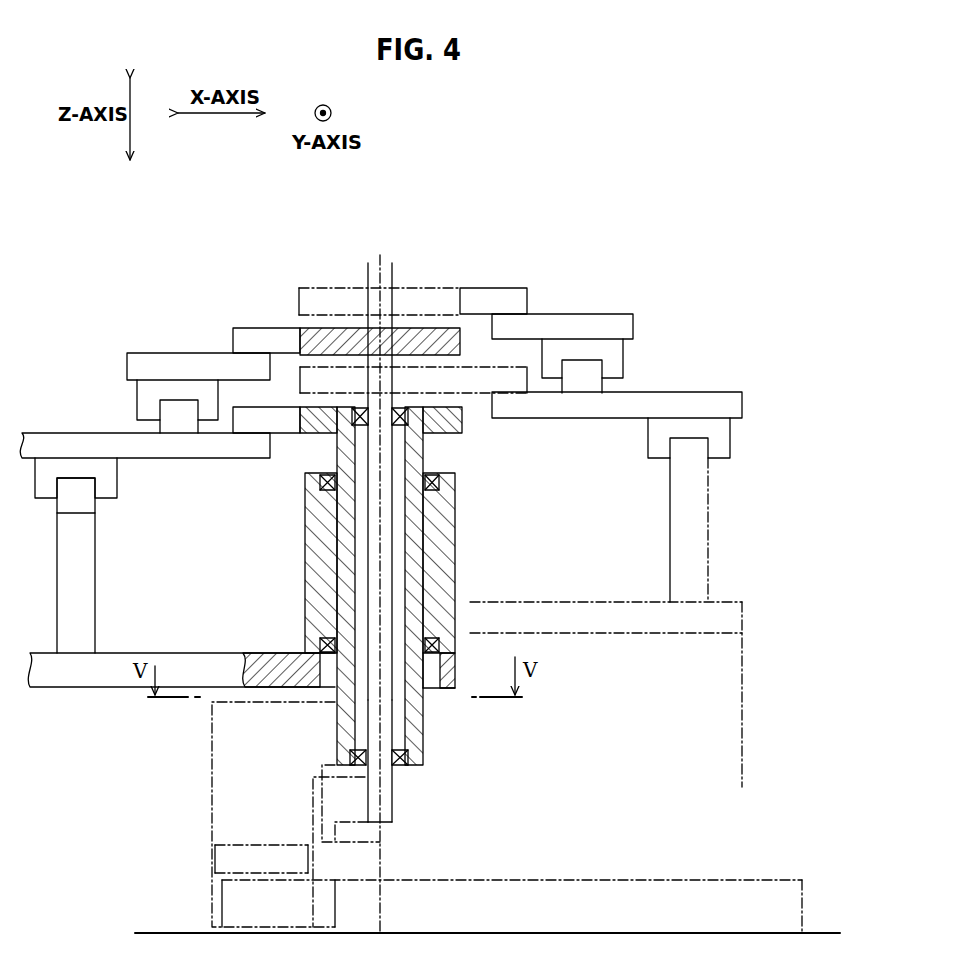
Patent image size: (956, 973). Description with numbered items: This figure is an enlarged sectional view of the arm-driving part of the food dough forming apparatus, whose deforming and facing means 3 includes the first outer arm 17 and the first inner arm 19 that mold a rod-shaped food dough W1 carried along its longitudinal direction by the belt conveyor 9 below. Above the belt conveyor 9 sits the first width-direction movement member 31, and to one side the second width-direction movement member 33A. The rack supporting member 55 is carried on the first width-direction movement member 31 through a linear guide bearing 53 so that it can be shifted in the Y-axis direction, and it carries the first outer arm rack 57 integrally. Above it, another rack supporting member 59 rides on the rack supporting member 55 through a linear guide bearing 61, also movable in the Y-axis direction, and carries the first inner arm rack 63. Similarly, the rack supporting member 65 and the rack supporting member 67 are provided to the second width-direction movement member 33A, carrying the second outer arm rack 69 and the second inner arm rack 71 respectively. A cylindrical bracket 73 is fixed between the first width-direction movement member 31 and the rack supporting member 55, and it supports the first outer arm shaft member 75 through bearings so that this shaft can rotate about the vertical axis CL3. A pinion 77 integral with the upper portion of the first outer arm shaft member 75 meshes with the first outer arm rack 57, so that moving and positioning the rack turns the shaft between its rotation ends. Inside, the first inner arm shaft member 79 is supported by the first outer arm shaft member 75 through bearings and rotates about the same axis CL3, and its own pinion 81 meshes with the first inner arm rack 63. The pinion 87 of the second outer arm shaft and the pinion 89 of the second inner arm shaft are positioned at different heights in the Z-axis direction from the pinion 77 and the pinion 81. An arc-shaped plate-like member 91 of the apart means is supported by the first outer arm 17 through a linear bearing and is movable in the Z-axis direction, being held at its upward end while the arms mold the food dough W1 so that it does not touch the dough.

The deforming and facing means 3 is at (386, 252).
The belt conveyor 9 is at (668, 931).
The first outer arm 17 is at (212, 780).
The first inner arm 19 is at (337, 858).
The first width-direction movement member 31 is at (126, 653).
The second width-direction movement member 33A is at (600, 602).
The linear guide bearing 53 is at (117, 482).
The rack supporting member 55 is at (40, 433).
The first outer arm rack 57 is at (283, 434).
The rack supporting member 59 is at (150, 353).
The linear guide bearing 61 is at (137, 402).
The first inner arm rack 63 is at (260, 328).
The rack supporting member 65 is at (715, 392).
The rack supporting member 67 is at (608, 314).
The second outer arm rack 69 is at (522, 367).
The second inner arm rack 71 is at (499, 288).
The cylindrical bracket 73 is at (458, 576).
The first outer arm shaft member 75 is at (423, 730).
The pinion 77 is at (312, 437).
The first inner arm shaft member 79 is at (393, 795).
The pinion 81 is at (462, 342).
The pinion 87 is at (447, 397).
The pinion 89 is at (440, 288).
The arc-shaped plate-like member 91 is at (247, 845).
The axis CL3 is at (382, 527).
The food dough W1 is at (638, 880).